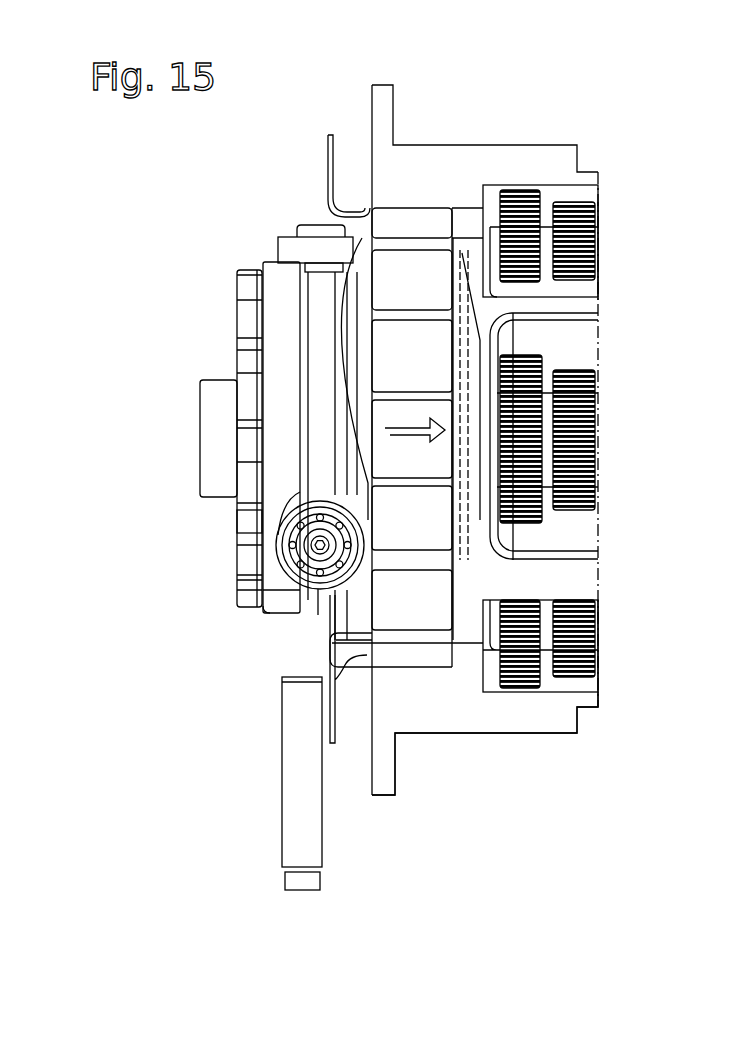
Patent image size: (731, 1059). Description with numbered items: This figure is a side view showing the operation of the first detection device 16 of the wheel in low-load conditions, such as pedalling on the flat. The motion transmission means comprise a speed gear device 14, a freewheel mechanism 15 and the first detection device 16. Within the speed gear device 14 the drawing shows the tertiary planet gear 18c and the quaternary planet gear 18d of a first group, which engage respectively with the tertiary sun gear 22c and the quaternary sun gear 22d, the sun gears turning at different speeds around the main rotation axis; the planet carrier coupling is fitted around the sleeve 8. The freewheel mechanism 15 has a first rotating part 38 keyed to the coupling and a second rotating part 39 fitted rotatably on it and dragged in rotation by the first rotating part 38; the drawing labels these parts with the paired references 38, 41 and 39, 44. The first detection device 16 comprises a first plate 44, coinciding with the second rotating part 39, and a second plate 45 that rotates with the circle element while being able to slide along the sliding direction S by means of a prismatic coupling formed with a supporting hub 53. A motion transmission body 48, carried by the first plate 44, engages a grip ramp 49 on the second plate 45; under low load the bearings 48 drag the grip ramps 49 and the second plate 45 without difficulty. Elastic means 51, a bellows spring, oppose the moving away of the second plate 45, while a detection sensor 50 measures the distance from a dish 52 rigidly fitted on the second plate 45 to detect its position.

The sleeve 8 is at (218, 423).
The speed gear device 14 is at (627, 410).
The freewheel mechanism 15 is at (175, 444).
The first detection device 16 is at (340, 183).
The tertiary planet gear 18c is at (577, 618).
The quaternary planet gear 18d is at (524, 664).
The tertiary sun gear 22c is at (577, 488).
The quaternary sun gear 22d is at (523, 508).
The first rotating part 38 is at (175, 564).
The spacer 41 is at (247, 518).
The second rotating part 39 is at (200, 636).
The first plate 44 is at (280, 604).
The second plate 45 is at (401, 277).
The motion transmission body 48 is at (286, 250).
The grip ramp 49 is at (358, 320).
The detection sensor 50 is at (298, 803).
The elastic means 51 is at (460, 340).
The dish 52 is at (340, 710).
The supporting hub 53 is at (550, 713).
The sliding direction S is at (398, 440).